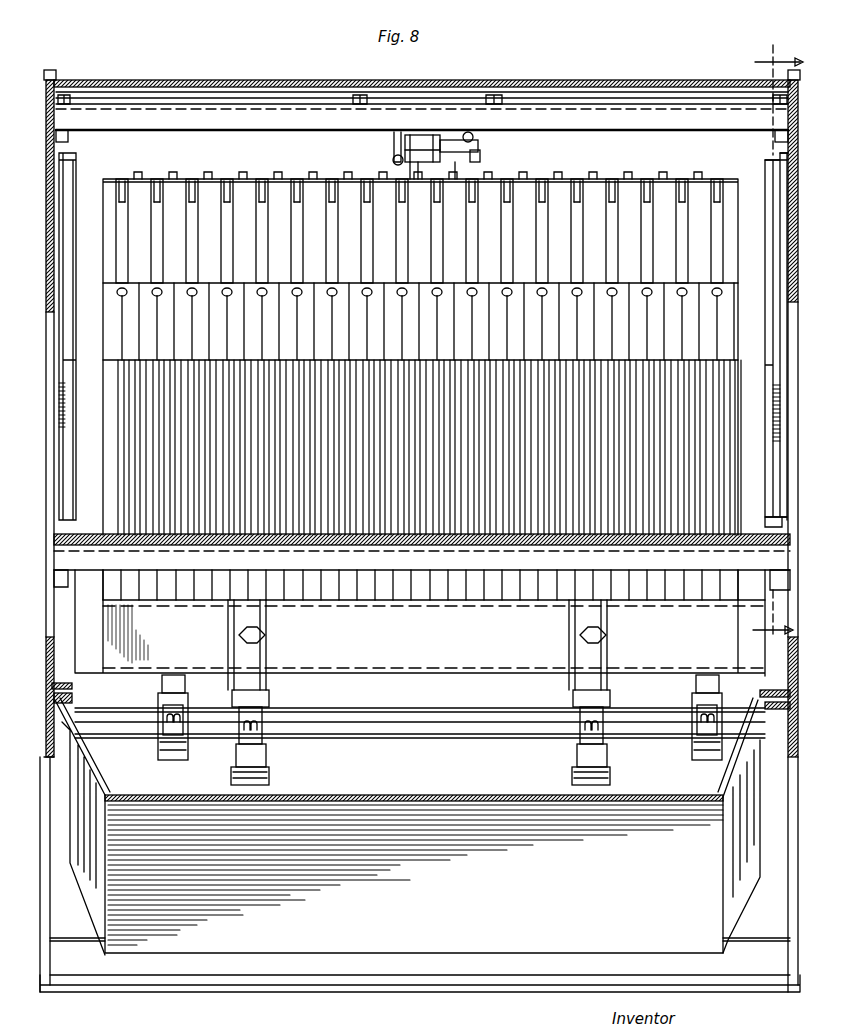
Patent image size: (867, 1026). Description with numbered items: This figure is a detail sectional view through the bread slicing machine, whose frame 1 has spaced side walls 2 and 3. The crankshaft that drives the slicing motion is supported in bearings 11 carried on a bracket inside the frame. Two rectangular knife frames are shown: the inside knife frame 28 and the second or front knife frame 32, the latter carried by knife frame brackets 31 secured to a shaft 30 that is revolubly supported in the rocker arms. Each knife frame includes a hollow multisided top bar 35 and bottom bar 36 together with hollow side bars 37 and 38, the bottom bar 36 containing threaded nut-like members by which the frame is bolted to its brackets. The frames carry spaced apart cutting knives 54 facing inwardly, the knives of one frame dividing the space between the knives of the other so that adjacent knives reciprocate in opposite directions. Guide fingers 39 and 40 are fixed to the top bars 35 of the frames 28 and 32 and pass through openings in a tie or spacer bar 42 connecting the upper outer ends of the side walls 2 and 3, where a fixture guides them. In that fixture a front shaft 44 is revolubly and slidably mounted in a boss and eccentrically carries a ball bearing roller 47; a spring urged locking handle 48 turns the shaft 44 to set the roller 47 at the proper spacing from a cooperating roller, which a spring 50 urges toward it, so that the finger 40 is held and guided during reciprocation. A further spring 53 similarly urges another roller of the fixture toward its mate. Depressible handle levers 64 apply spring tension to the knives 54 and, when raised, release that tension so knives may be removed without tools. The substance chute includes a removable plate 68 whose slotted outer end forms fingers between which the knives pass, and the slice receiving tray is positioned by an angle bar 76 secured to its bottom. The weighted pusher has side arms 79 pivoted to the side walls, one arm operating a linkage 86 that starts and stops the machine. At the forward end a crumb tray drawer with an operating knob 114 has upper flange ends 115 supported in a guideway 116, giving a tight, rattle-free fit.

The frame 1 is at (180, 990).
The side wall 2 is at (44, 476).
The side wall 3 is at (790, 338).
The bearings 11 is at (778, 350).
The inside knife frame 28 is at (663, 178).
The shaft 30 is at (468, 735).
The knife frame brackets 31 is at (272, 648).
The second knife frame 32 is at (458, 666).
The top bar 35 is at (172, 198).
The bottom bar 36 is at (392, 660).
The side bar 37 is at (409, 447).
The side bar 38 is at (750, 503).
The guide finger 39 is at (455, 181).
The guide finger 40 is at (402, 182).
The tie or spacer bar 42 is at (274, 124).
The front shaft 44 is at (481, 158).
The ball bearing roller 47 is at (393, 140).
The spring urged locking handle 48 is at (474, 138).
The spring 50 is at (393, 159).
The spring 53 is at (440, 160).
The cutting knives 54 is at (338, 293).
The depressible handle levers 64 is at (300, 176).
The removable plate 68 is at (511, 576).
The angle bar 76 is at (408, 576).
The side arms 79 is at (62, 301).
The linkage 86 is at (776, 278).
The knob 114 is at (118, 832).
The upper flange ends 115 is at (74, 699).
The guideway 116 is at (72, 688).